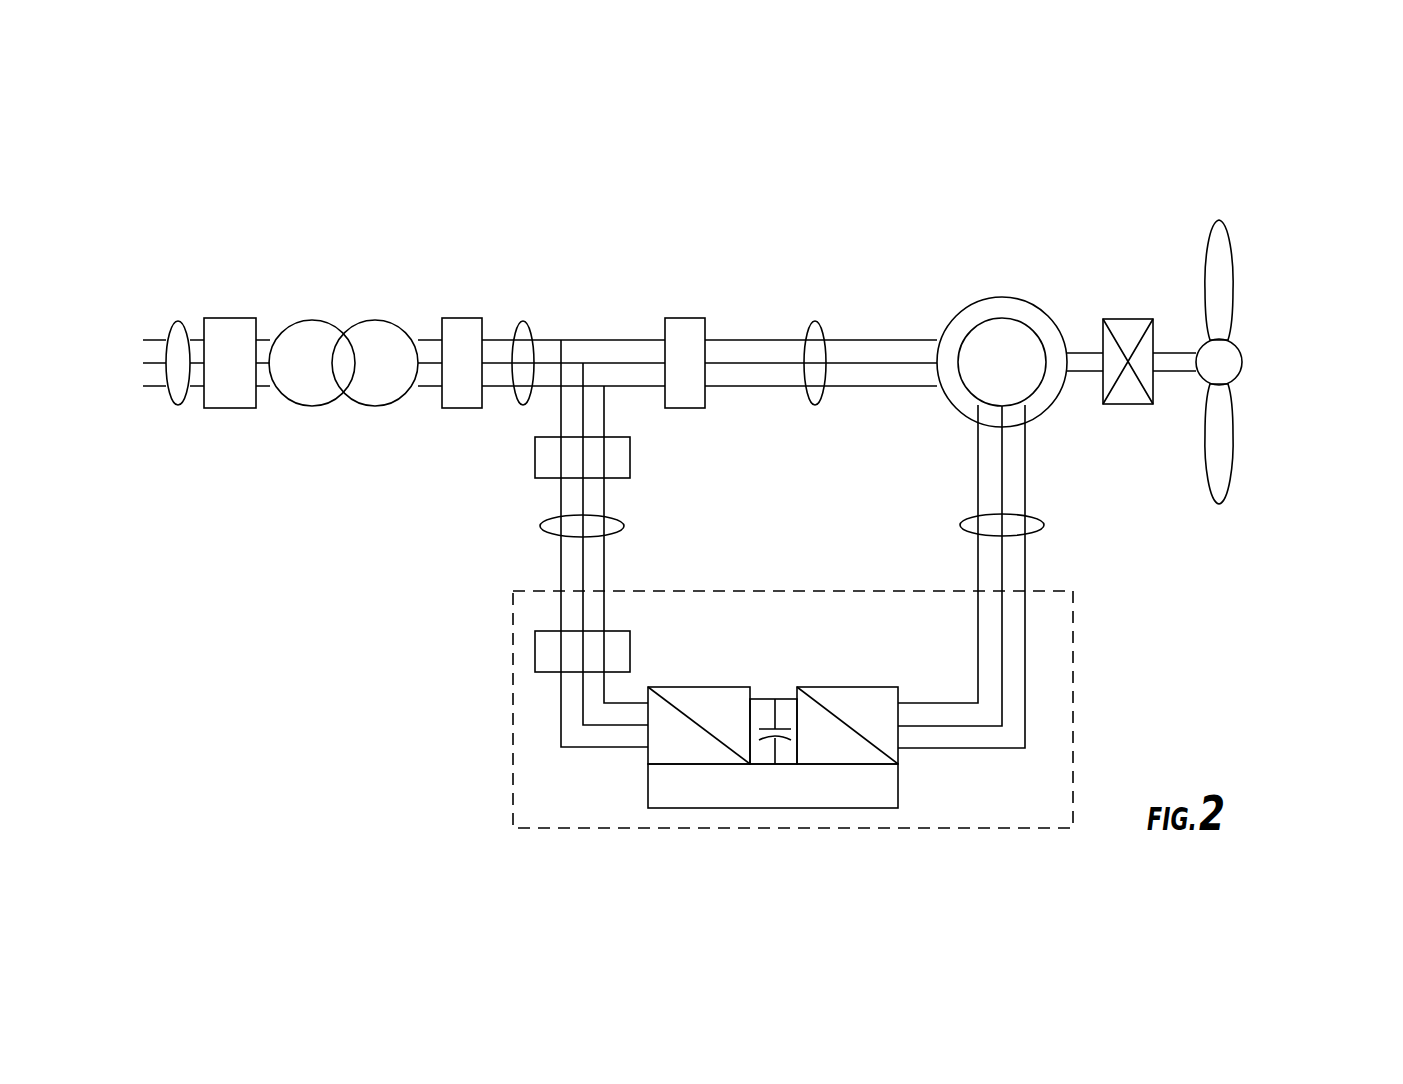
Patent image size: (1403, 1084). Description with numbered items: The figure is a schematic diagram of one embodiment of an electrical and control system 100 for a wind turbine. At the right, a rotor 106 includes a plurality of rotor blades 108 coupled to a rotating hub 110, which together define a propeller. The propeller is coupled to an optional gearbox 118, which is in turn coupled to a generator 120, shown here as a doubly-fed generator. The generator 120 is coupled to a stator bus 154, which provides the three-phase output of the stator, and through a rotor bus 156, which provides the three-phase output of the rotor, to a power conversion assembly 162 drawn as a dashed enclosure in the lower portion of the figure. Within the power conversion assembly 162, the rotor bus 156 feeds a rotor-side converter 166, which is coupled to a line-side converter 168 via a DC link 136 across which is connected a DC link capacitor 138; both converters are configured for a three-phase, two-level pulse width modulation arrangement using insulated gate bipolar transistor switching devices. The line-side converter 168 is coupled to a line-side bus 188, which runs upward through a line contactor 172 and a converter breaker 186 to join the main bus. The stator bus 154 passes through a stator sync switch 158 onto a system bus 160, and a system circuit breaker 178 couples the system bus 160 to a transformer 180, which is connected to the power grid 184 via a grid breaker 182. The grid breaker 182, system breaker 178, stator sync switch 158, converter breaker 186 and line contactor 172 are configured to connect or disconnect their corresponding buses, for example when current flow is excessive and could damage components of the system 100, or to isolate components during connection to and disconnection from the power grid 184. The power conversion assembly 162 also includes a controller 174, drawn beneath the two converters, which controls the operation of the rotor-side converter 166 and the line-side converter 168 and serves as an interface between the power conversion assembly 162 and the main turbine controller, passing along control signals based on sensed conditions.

The electrical and control system 100 is at (390, 697).
The rotor 106 is at (1293, 232).
The rotor blades 108 is at (1232, 300).
The rotating hub 110 is at (1242, 362).
The gearbox 118 is at (1133, 319).
The generator 120 is at (1000, 297).
The DC link 136 is at (786, 700).
The DC link capacitor 138 is at (768, 727).
The stator bus 154 is at (815, 322).
The rotor bus 156 is at (1044, 525).
The stator sync switch 158 is at (685, 318).
The system bus 160 is at (523, 322).
The power conversion assembly 162 is at (1073, 685).
The rotor-side converter 166 is at (898, 757).
The line-side converter 168 is at (648, 757).
The line contactor 172 is at (535, 652).
The controller 174 is at (712, 809).
The system circuit breaker 178 is at (462, 318).
The transformer 180 is at (375, 320).
The grid breaker 182 is at (222, 318).
The power grid 184 is at (178, 322).
The converter breaker 186 is at (535, 457).
The line-side bus 188 is at (540, 526).